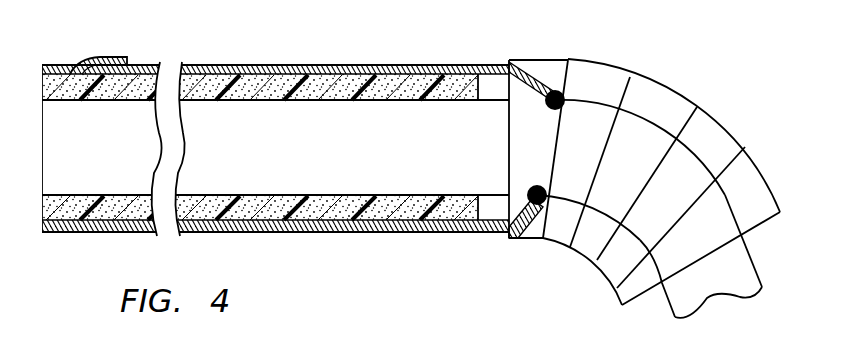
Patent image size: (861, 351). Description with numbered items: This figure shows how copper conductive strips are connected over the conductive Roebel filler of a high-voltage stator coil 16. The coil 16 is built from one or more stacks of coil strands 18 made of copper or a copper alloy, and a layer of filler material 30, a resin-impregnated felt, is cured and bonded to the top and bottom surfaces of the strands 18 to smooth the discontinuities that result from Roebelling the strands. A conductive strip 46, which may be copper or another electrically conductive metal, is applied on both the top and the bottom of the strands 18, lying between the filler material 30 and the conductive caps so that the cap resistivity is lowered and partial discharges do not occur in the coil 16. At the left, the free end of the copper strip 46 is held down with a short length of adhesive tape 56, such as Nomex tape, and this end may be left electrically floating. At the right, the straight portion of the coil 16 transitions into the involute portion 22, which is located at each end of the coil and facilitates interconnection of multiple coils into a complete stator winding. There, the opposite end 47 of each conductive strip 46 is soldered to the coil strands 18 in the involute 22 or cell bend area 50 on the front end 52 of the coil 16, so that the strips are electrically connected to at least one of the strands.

The stator coil 16 is at (390, 57).
The coil strands 18 is at (271, 160).
The involute portion 22 is at (713, 110).
The filler material 30 is at (322, 83).
The conductive strip 46 is at (247, 64).
The opposite end of the conductive strip 47 is at (562, 94).
The cell bend area 50 is at (674, 87).
The front end of the coil 52 is at (748, 147).
The adhesive tape 56 is at (84, 68).